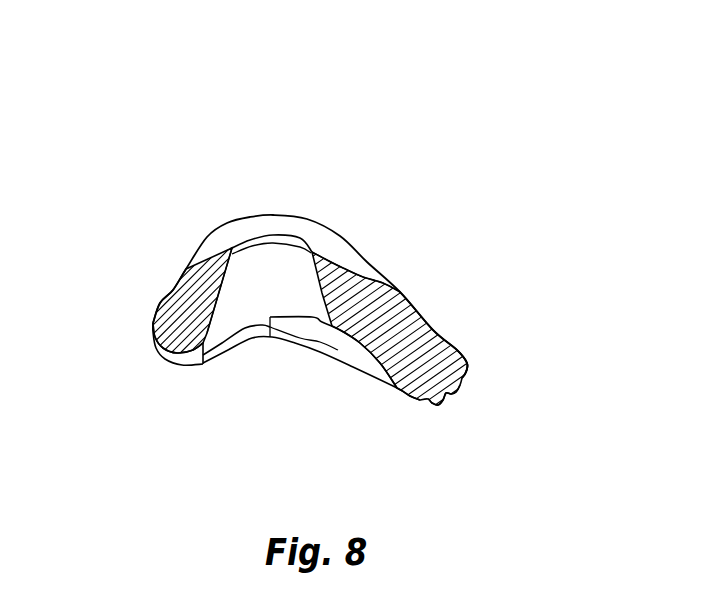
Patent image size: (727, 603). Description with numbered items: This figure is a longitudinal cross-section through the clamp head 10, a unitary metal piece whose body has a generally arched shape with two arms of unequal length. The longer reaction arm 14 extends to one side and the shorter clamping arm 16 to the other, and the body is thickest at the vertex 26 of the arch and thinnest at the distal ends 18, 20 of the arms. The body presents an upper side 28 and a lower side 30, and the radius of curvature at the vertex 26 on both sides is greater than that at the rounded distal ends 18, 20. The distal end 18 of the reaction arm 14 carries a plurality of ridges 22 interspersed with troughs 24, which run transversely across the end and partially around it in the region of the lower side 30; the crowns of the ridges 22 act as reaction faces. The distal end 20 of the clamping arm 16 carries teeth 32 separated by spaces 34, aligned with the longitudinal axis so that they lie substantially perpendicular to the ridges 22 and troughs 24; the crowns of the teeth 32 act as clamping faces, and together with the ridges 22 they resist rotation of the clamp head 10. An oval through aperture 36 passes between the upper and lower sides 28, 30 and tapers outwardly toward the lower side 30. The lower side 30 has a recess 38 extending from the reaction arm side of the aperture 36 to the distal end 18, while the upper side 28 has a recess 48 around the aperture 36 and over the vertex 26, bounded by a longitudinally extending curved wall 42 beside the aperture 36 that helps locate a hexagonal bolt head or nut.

The clamp head 10 is at (373, 114).
The reaction arm 14 is at (397, 335).
The clamping arm 16 is at (182, 300).
The distal end of reaction arm 18 is at (467, 357).
The distal end of clamping arm 20 is at (155, 328).
The ridges 22 is at (440, 402).
The troughs 24 is at (457, 391).
The vertex 26 is at (262, 213).
The upper side 28 is at (307, 218).
The lower side 30 is at (303, 350).
The teeth 32 is at (157, 360).
The spaces 34 is at (183, 365).
The through aperture 36 is at (243, 257).
The recess 38 is at (348, 342).
The curved wall 42 is at (272, 213).
The recess 48 is at (310, 250).